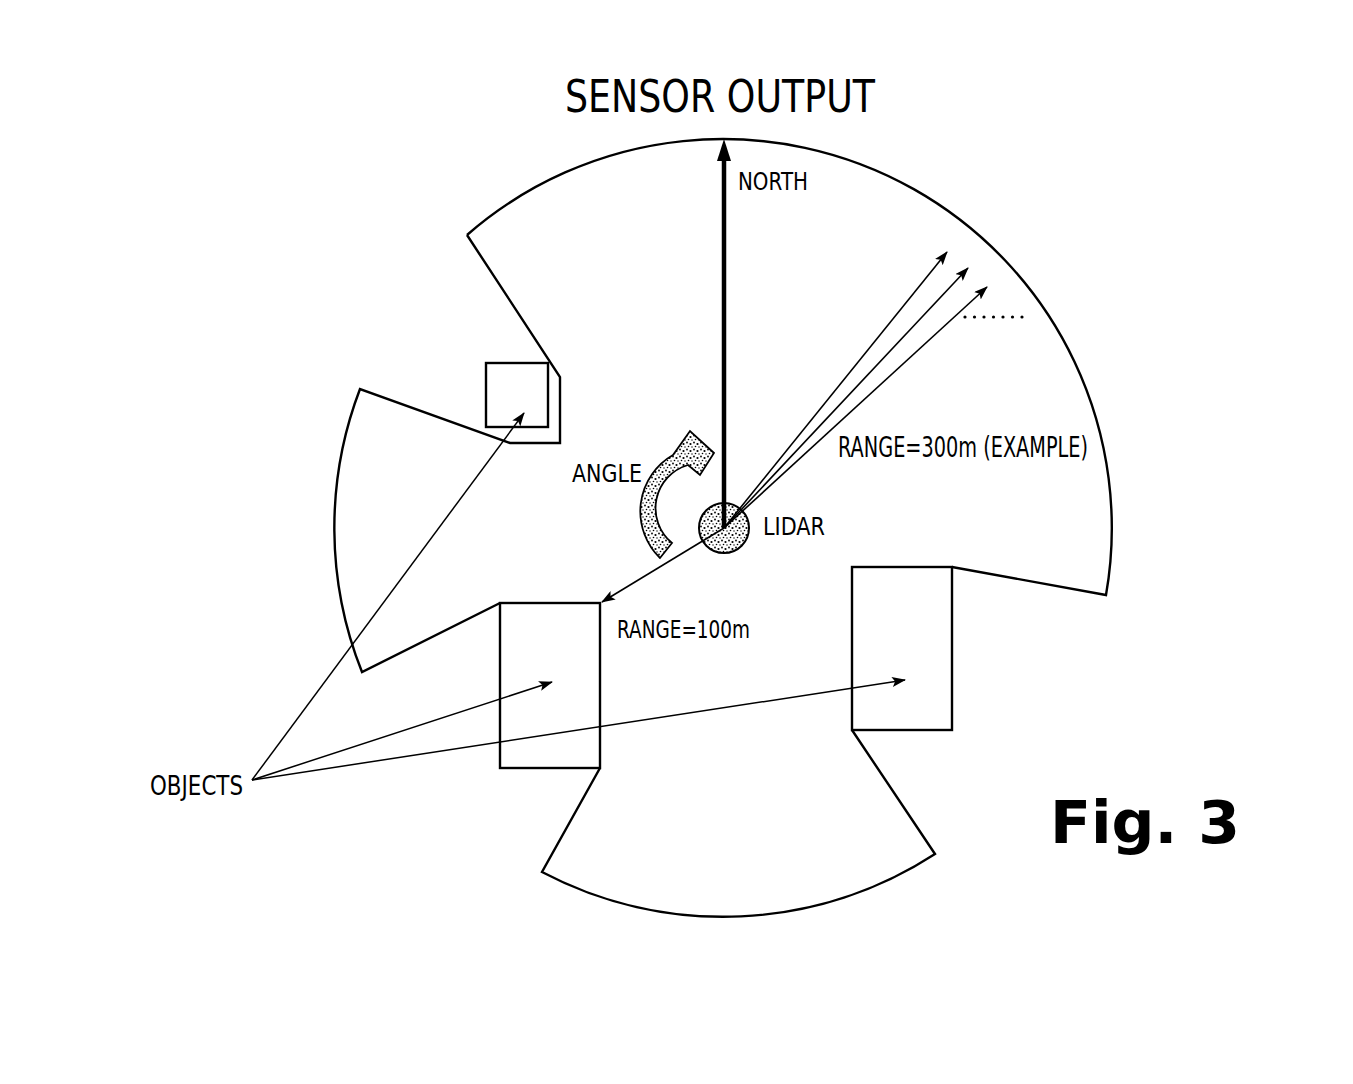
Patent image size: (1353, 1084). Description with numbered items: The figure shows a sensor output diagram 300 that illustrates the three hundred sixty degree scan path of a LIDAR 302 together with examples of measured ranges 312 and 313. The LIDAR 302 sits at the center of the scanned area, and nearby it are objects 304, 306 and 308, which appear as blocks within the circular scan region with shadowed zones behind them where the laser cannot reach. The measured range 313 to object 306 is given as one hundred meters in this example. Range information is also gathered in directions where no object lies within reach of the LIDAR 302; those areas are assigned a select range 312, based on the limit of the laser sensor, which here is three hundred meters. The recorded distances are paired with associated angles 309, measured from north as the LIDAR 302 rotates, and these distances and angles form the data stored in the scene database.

The sensor output diagram 300 is at (1087, 200).
The LIDAR 302 is at (742, 553).
The object 304 is at (913, 567).
The object 306 is at (528, 602).
The object 308 is at (485, 383).
The angle 309 is at (665, 452).
The select range 312 is at (895, 358).
The measured range 313 is at (656, 581).